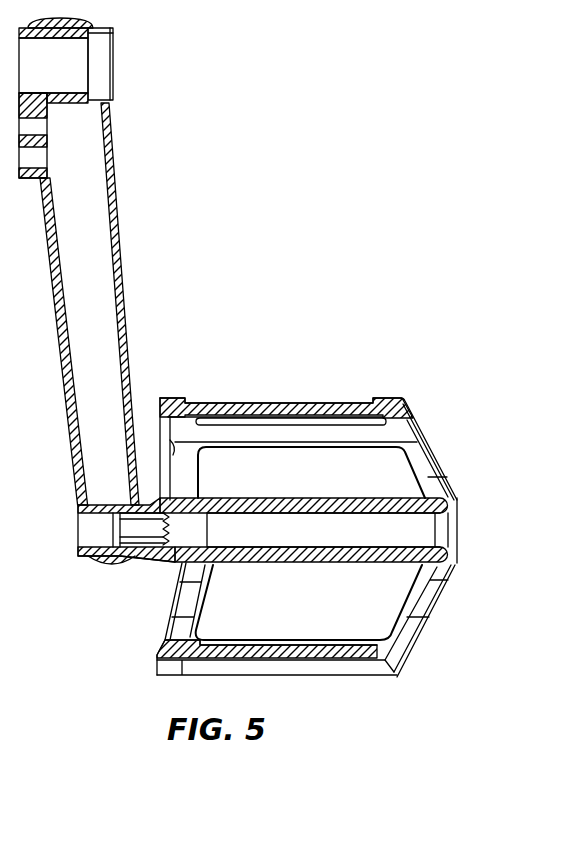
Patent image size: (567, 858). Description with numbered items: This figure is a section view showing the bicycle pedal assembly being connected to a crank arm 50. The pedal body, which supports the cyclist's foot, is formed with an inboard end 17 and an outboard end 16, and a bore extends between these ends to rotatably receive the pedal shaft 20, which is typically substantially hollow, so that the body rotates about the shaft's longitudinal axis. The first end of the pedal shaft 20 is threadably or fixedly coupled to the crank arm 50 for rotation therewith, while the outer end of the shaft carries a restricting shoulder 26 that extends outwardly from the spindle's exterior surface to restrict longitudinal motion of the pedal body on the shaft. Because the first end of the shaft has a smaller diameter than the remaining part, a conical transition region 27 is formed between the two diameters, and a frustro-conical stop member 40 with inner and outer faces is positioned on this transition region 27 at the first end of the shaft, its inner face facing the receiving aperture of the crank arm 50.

The bicycle crank arm 50 is at (120, 230).
The conical transition region 27 is at (187, 533).
The frustro-conical stop member 40 is at (157, 505).
The outboard end 16 is at (410, 405).
The restricting shoulder 26 is at (457, 503).
The pedal shaft 20 is at (330, 530).
The inboard end 17 is at (155, 652).